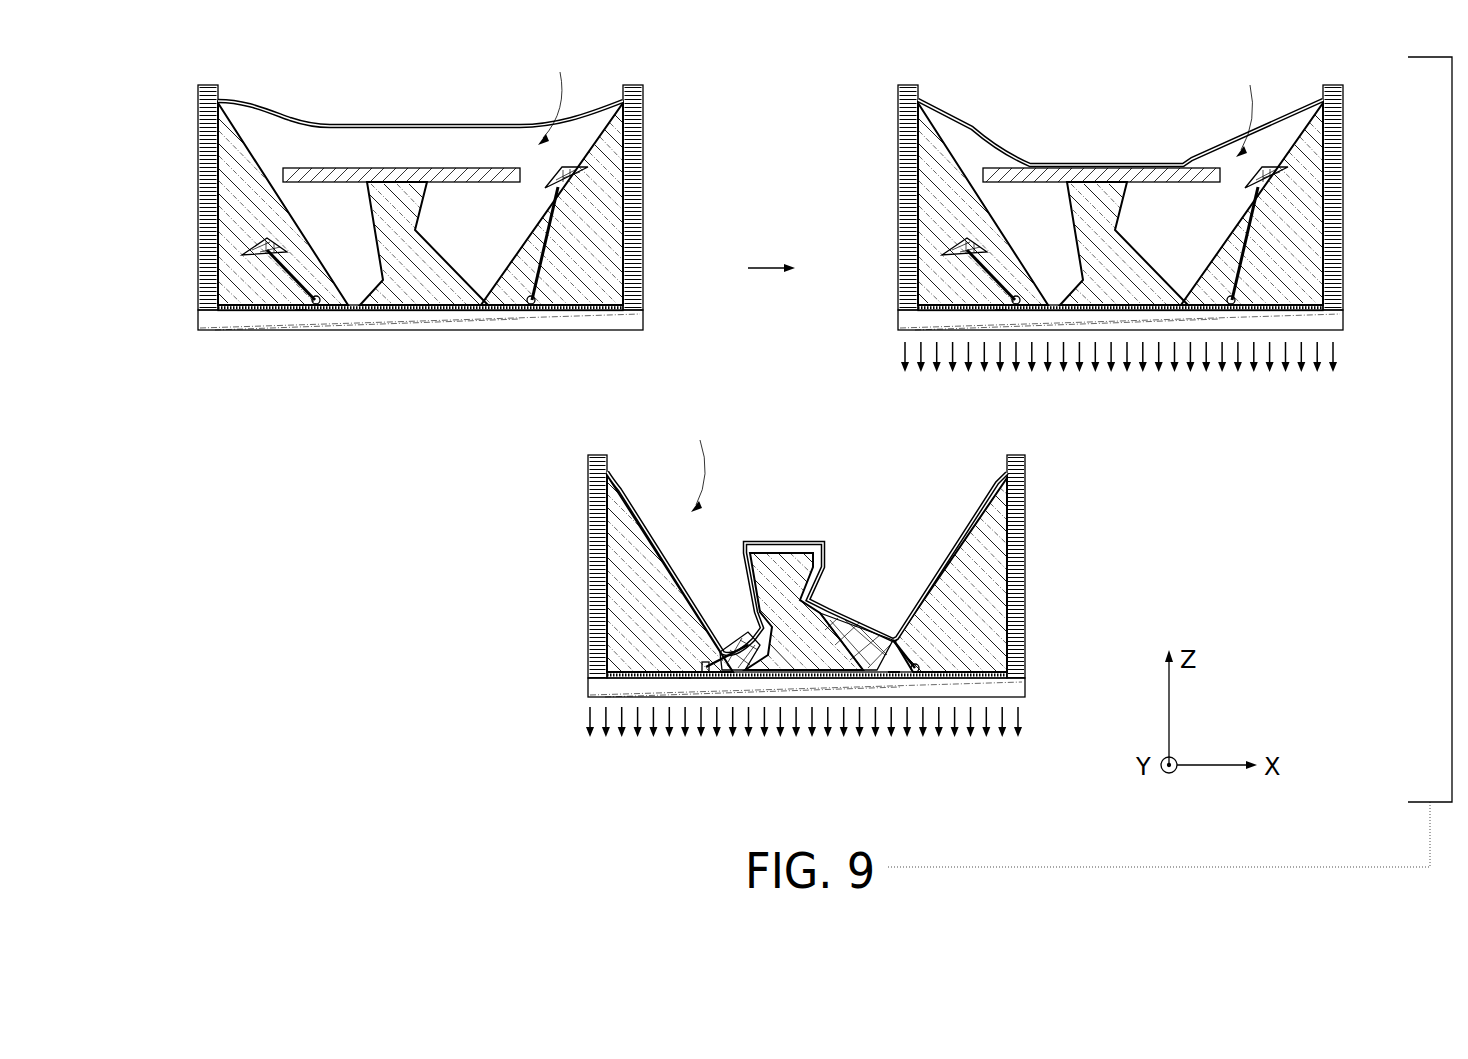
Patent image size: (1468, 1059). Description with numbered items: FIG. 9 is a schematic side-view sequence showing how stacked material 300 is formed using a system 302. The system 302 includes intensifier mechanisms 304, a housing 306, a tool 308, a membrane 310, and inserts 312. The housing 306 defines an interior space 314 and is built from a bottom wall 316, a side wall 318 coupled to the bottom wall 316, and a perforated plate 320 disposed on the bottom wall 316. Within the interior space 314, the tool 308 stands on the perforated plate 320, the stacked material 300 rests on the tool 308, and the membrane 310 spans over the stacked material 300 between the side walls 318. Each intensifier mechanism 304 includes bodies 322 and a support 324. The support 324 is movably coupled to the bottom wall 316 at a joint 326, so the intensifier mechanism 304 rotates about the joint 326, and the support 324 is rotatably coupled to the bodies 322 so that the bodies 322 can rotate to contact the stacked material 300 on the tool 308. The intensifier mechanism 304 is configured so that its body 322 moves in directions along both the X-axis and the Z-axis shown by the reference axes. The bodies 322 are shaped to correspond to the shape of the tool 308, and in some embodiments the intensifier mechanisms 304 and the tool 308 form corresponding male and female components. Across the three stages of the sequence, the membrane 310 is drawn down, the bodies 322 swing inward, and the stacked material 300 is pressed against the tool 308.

The stacked material 300 is at (390, 168).
The system 302 is at (176, 110).
The intensifier mechanism 304 is at (766, 375).
The housing 306 is at (222, 252).
The tool 308 is at (432, 265).
The membrane 310 is at (515, 124).
The insert 312 is at (638, 292).
The interior space 314 is at (932, 391).
The bottom wall 316 is at (392, 320).
The side wall 318 is at (643, 215).
The perforated plate 320 is at (300, 311).
The body 322 is at (582, 178).
The support 324 is at (285, 307).
The joint 326 is at (316, 305).